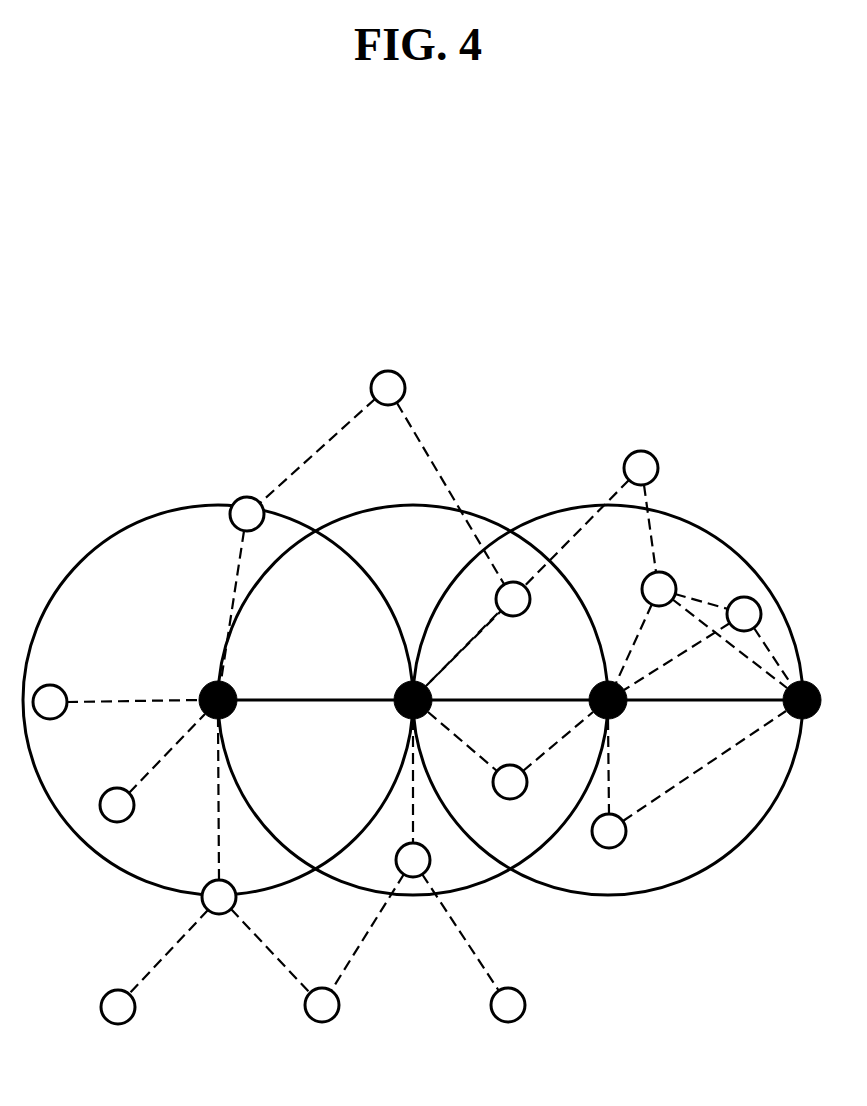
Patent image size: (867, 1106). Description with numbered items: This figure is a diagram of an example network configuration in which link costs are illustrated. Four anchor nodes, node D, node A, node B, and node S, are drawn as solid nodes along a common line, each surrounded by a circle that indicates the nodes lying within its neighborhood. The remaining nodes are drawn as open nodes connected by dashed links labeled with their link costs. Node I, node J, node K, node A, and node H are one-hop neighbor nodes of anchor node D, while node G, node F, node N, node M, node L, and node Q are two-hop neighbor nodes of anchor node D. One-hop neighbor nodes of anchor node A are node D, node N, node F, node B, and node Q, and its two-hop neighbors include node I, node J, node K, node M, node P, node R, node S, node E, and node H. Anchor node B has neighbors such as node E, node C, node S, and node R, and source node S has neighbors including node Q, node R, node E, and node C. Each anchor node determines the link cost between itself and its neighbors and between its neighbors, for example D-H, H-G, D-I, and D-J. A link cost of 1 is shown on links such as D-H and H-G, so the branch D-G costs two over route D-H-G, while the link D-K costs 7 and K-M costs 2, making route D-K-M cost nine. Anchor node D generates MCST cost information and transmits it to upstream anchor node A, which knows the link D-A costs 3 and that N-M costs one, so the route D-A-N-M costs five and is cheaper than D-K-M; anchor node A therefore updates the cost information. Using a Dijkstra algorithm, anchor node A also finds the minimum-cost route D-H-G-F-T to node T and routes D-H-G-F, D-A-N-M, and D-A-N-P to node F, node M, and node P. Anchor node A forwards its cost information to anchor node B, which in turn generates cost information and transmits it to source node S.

The anchor node A is at (420, 720).
The anchor node B is at (617, 720).
The anchor node D is at (228, 720).
The source node S is at (810, 720).
The node C is at (740, 592).
The node E is at (667, 567).
The node F is at (498, 599).
The node G is at (369, 387).
The node H is at (245, 491).
The node I is at (50, 680).
The node J is at (102, 804).
The node K is at (205, 878).
The node L is at (118, 1032).
The node M is at (322, 1031).
The node N is at (397, 861).
The node P is at (508, 1030).
The node Q is at (514, 806).
The node R is at (609, 855).
The node T is at (641, 444).
The link cost 1 is at (496, 695).
The link cost 2 is at (434, 796).
The link cost 3 is at (271, 823).
The link cost 7 is at (207, 799).